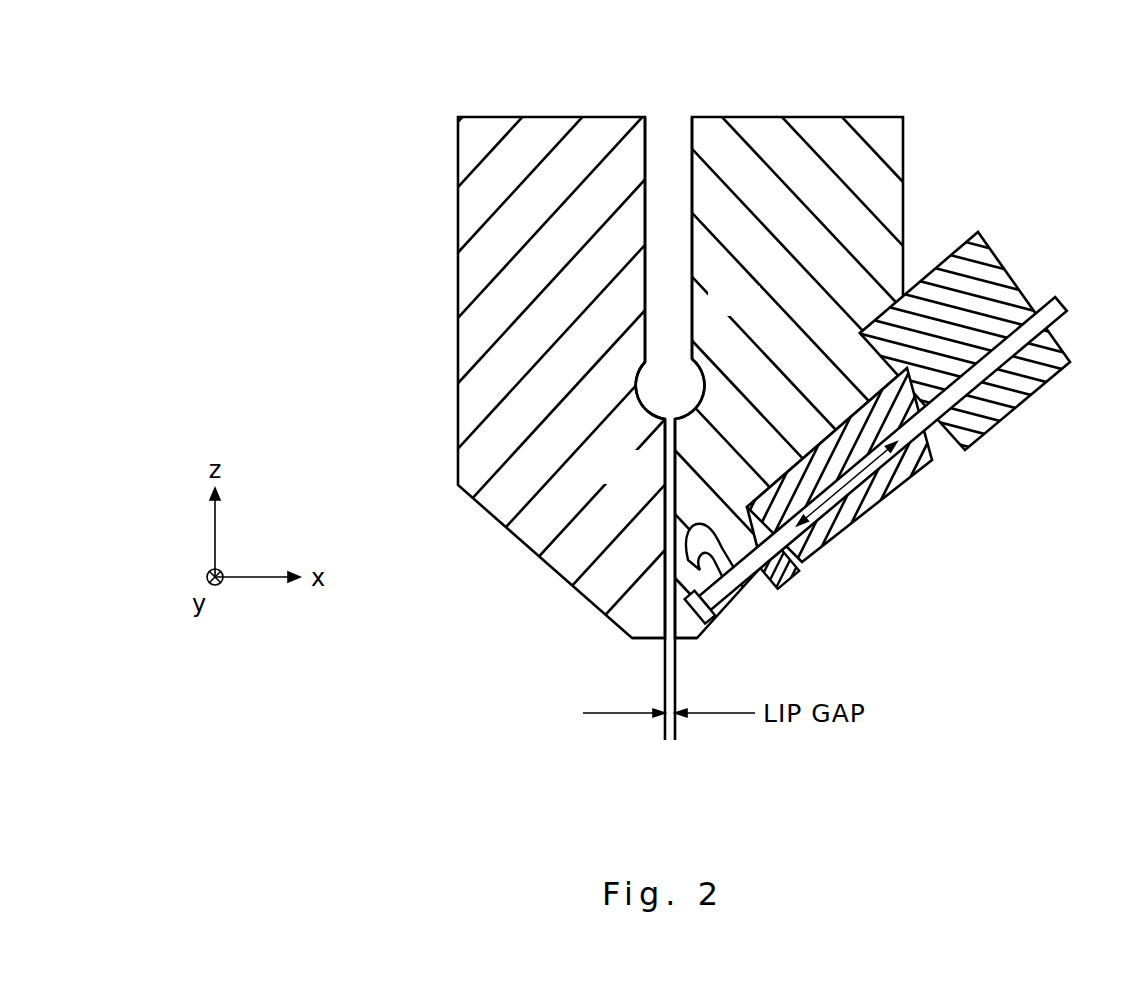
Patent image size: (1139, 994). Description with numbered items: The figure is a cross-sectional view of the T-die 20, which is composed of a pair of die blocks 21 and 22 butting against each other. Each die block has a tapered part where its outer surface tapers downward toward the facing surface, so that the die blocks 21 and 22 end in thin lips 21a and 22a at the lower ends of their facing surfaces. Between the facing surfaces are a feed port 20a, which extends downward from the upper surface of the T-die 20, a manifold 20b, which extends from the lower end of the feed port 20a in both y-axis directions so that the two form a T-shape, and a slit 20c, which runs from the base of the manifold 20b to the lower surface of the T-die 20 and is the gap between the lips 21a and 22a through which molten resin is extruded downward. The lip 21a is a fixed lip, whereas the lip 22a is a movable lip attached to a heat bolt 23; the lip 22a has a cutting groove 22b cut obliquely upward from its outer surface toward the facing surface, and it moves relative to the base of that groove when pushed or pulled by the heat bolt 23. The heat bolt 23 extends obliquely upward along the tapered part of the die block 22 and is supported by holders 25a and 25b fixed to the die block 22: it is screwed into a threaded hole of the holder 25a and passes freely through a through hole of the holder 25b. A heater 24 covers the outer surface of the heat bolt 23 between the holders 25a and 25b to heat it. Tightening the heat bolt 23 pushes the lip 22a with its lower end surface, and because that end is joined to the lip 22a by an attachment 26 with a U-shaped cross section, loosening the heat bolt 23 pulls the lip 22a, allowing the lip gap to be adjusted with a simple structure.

The T-die 20 is at (967, 178).
The feed port 20a is at (647, 133).
The manifold 20b is at (650, 370).
The slit 20c is at (673, 505).
The die block 21 is at (548, 128).
The lip 21a is at (651, 642).
The die block 22 is at (762, 128).
The lip 22a is at (687, 642).
The cutting groove 22b is at (700, 533).
The heat bolt 23 is at (1061, 306).
The heater 24 is at (903, 478).
The holder 25a is at (988, 248).
The holder 25b is at (788, 582).
The attachment 26 is at (713, 622).